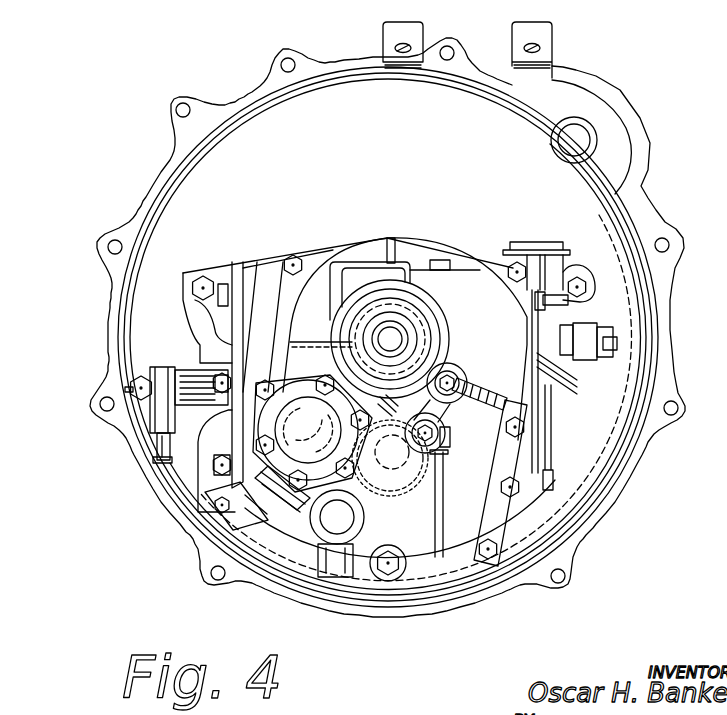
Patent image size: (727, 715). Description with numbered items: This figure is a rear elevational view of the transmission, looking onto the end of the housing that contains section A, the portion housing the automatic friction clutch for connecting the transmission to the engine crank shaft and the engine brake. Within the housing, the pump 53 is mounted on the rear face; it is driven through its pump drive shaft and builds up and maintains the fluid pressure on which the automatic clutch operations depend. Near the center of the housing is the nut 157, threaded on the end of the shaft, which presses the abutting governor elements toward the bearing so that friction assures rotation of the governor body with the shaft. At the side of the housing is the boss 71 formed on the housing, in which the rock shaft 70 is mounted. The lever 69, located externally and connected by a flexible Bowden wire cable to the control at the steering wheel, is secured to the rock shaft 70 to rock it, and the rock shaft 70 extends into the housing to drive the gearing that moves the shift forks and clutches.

The section A is at (212, 178).
The nut 157 is at (410, 330).
The pump 53 is at (288, 338).
The boss 71 is at (186, 372).
The rock shaft 70 is at (112, 380).
The lever 69 is at (155, 441).